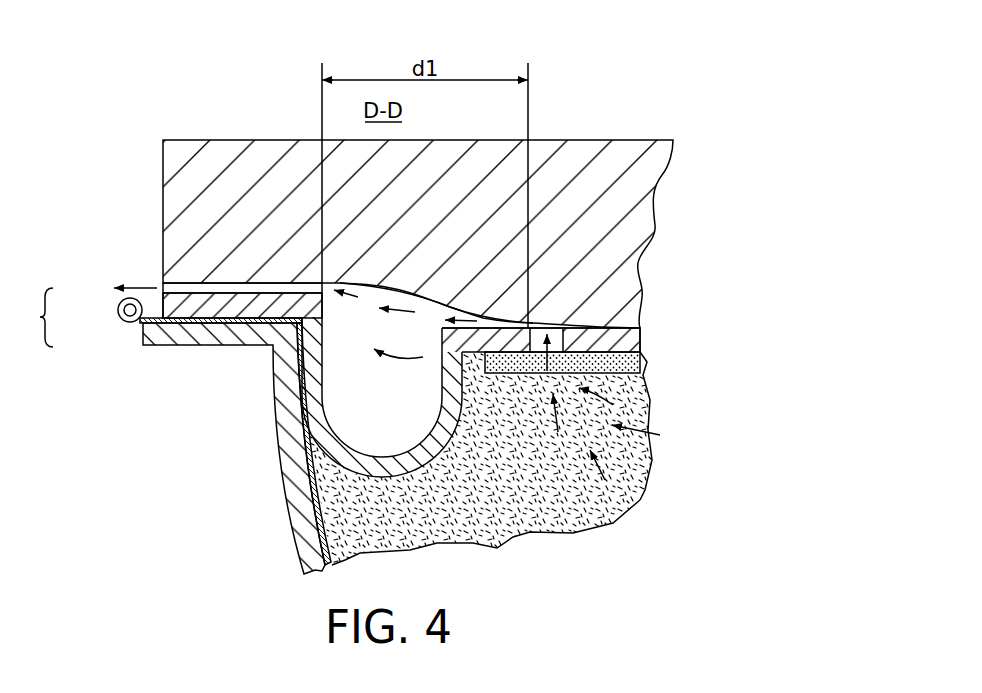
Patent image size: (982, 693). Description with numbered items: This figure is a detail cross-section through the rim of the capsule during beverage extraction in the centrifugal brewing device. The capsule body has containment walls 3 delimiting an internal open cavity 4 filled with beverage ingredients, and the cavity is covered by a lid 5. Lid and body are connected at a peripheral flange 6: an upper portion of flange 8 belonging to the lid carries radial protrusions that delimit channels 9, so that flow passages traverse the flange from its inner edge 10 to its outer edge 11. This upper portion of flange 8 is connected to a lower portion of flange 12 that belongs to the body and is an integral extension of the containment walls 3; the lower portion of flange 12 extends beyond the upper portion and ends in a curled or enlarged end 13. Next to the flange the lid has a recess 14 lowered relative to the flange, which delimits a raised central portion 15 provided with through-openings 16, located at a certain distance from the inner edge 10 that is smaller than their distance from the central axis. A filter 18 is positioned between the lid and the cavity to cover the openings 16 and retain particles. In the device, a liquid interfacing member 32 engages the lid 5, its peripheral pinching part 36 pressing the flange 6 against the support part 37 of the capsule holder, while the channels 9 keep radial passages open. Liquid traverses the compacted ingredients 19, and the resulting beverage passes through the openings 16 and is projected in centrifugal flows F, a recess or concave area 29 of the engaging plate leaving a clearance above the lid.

The containment walls 3 is at (299, 477).
The internal open cavity 4 is at (443, 530).
The lid 5 is at (570, 236).
The flange 6 is at (161, 327).
The portion of flange 8 is at (207, 310).
The channel 9 is at (186, 290).
The inner edge 10 is at (327, 284).
The outer edge 11 is at (163, 287).
The portion of flange 12 is at (147, 323).
The curled or enlarged end 13 is at (117, 315).
The recess 14 is at (345, 378).
The central portion 15 is at (600, 328).
The through-openings 16 is at (542, 327).
The filter 18 is at (633, 360).
The chamber 19 is at (612, 356).
The recess or concave area 29 is at (410, 292).
The liquid interfacing member 32 is at (454, 214).
The peripheral pinching part 36 is at (228, 283).
The support part 37 is at (252, 337).